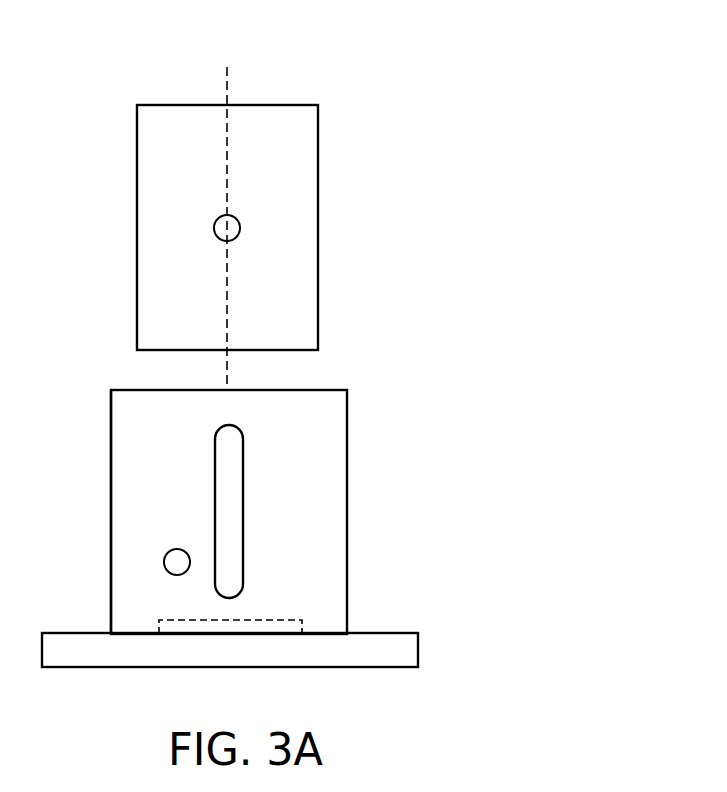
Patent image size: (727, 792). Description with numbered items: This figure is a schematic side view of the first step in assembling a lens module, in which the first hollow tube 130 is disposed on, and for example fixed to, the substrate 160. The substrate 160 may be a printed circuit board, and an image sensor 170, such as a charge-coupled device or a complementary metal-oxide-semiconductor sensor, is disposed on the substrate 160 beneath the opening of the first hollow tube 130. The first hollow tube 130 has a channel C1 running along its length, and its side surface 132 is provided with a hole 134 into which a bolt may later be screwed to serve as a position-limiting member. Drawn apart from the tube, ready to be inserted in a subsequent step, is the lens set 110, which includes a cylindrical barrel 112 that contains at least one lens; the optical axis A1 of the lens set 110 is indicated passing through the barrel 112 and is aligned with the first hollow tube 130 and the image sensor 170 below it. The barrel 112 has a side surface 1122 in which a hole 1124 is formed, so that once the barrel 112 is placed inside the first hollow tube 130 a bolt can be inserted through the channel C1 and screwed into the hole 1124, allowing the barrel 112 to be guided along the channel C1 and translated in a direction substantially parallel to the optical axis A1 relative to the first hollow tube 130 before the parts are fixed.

The lens set 110 is at (229, 210).
The barrel 112 is at (165, 180).
The side surface 1122 is at (136, 296).
The hole 1124 is at (234, 228).
The optical axis A1 is at (226, 78).
The first hollow tube 130 is at (225, 512).
The side surface 132 is at (110, 458).
The hole 134 is at (185, 562).
The channel C1 is at (215, 477).
The substrate 160 is at (398, 650).
The image sensor 170 is at (305, 627).